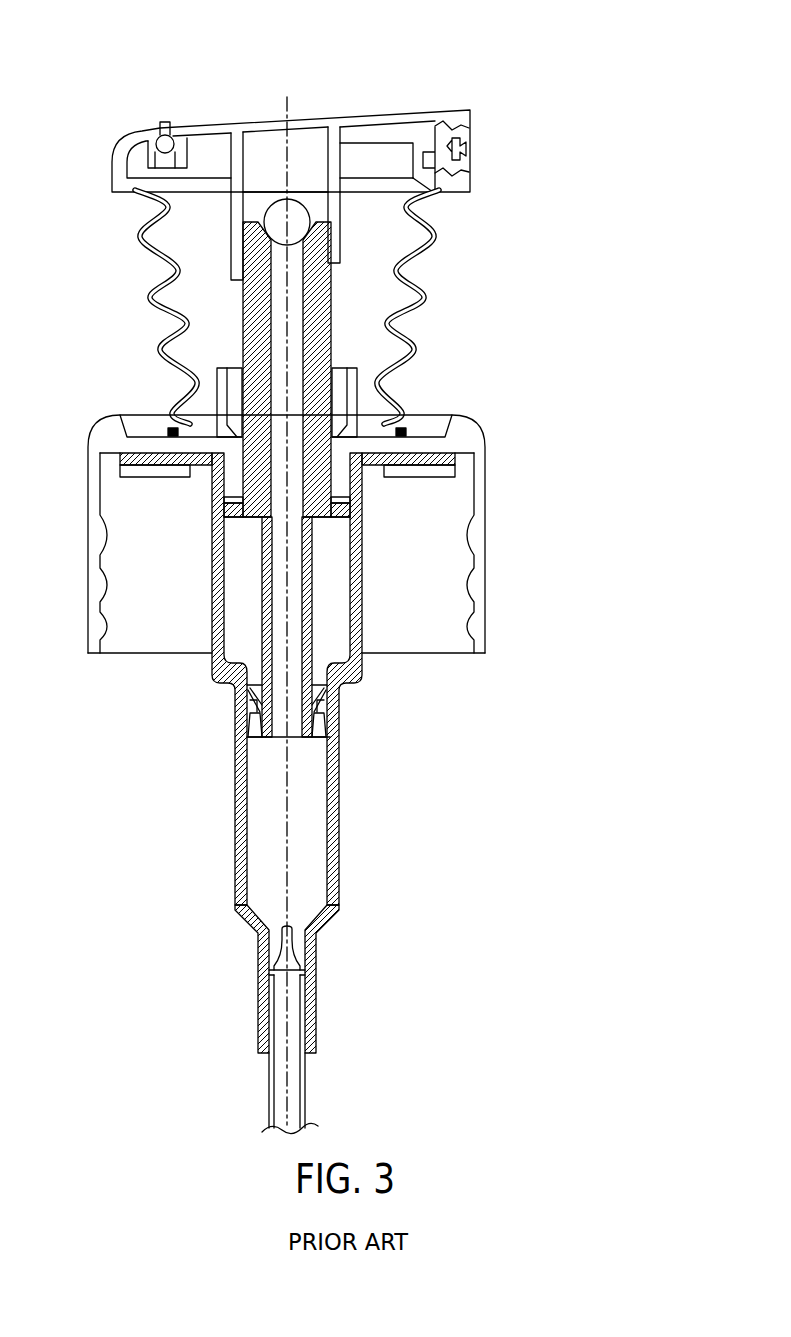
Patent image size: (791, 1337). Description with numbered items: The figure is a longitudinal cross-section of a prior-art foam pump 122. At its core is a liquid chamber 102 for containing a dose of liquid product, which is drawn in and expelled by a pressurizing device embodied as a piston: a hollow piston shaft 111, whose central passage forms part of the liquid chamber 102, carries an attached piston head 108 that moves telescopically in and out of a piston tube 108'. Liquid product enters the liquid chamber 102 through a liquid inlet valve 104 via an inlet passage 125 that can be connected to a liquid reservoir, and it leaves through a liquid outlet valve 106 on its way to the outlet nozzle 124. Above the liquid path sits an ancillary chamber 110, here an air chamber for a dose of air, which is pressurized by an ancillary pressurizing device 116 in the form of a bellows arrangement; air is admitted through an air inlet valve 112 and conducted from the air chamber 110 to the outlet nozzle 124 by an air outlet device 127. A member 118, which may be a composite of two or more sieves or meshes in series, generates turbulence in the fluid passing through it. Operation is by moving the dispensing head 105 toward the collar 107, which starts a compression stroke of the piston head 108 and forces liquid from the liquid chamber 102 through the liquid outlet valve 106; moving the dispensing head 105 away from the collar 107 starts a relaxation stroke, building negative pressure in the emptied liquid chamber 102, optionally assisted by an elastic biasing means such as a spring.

The dispensing head 105 is at (302, 116).
The air inlet valve 112 is at (157, 138).
The outlet nozzle 124 is at (470, 150).
The member for generating turbulence 118 is at (257, 205).
The liquid outlet valve 106 is at (298, 222).
The air outlet device 127 is at (247, 254).
The ancillary pressurizing device 116 is at (413, 264).
The ancillary chamber 110 is at (355, 314).
The liquid chamber 102 is at (290, 360).
The foam pump 122 is at (566, 362).
The collar 107 is at (477, 548).
The piston shaft 111 is at (263, 588).
The piston head 108 is at (288, 709).
The piston tube 108' is at (321, 927).
The liquid inlet valve 104 is at (298, 900).
The inlet passage 125 is at (293, 1118).